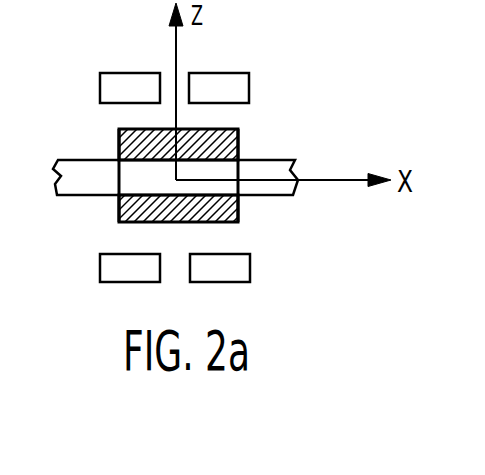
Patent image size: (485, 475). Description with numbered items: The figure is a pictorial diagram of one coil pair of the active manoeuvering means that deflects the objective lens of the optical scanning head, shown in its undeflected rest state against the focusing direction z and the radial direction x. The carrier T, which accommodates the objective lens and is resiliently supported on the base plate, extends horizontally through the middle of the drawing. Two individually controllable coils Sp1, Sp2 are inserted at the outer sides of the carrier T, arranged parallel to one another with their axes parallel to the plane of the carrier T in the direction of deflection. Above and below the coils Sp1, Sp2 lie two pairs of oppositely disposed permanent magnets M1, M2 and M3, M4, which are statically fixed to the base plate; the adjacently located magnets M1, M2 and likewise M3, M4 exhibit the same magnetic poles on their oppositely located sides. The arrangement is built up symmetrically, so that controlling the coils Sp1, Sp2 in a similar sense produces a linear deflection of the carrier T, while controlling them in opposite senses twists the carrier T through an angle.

The permanent magnet M1 is at (107, 73).
The permanent magnet M2 is at (244, 73).
The permanent magnet M3 is at (103, 283).
The permanent magnet M4 is at (240, 283).
The coil Sp1 is at (238, 150).
The coil Sp2 is at (238, 205).
The carrier T is at (77, 158).